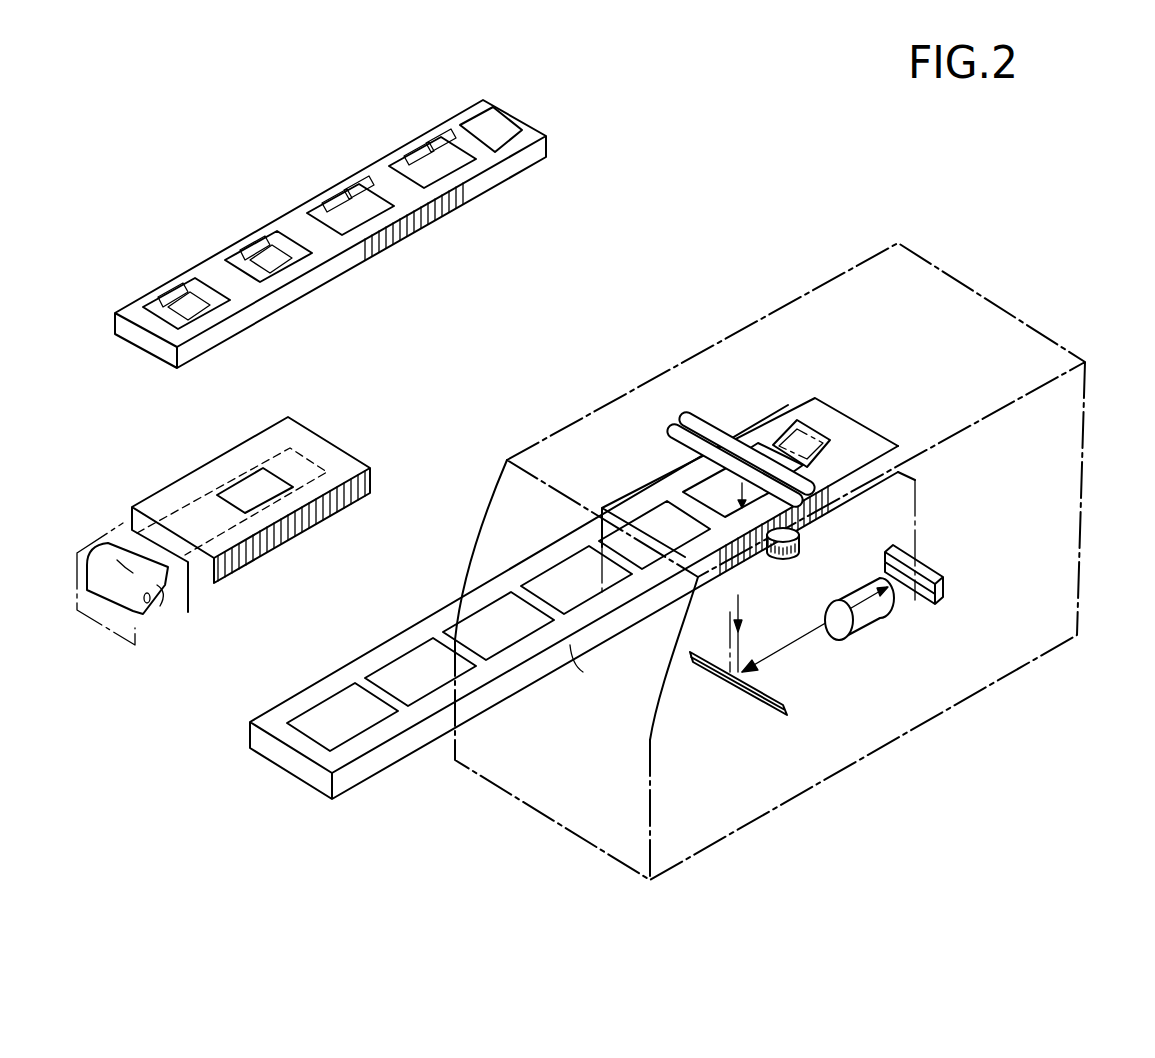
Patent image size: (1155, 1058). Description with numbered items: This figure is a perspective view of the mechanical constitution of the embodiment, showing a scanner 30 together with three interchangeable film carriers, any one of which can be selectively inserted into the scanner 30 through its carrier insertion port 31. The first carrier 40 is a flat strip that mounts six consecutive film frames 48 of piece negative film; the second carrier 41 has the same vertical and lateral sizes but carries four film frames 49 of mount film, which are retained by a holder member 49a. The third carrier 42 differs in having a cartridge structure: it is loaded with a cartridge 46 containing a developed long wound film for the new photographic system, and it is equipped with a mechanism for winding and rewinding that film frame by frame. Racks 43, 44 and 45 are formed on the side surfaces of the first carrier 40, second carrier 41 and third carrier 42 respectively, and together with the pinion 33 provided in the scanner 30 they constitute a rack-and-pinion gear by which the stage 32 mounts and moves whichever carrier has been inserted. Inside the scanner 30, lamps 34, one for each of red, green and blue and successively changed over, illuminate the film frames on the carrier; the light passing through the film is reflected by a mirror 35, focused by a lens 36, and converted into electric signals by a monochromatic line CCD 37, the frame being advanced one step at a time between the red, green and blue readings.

The scanner 30 is at (1006, 308).
The carrier insertion port 31 is at (578, 660).
The stage 32 is at (692, 570).
The pinion 33 is at (787, 557).
The lamp 34 is at (684, 418).
The mirror 35 is at (780, 715).
The lens 36 is at (873, 617).
The CCD 37 is at (938, 610).
The first carrier 40 is at (694, 613).
The second carrier 41 is at (434, 234).
The third carrier 42 is at (223, 523).
The rack 43 is at (929, 501).
The rack 44 is at (463, 205).
The rack 45 is at (250, 558).
The cartridge 46 is at (157, 612).
The film frames 48 is at (373, 728).
The film frames 49 is at (282, 267).
The holder member 49a is at (282, 260).